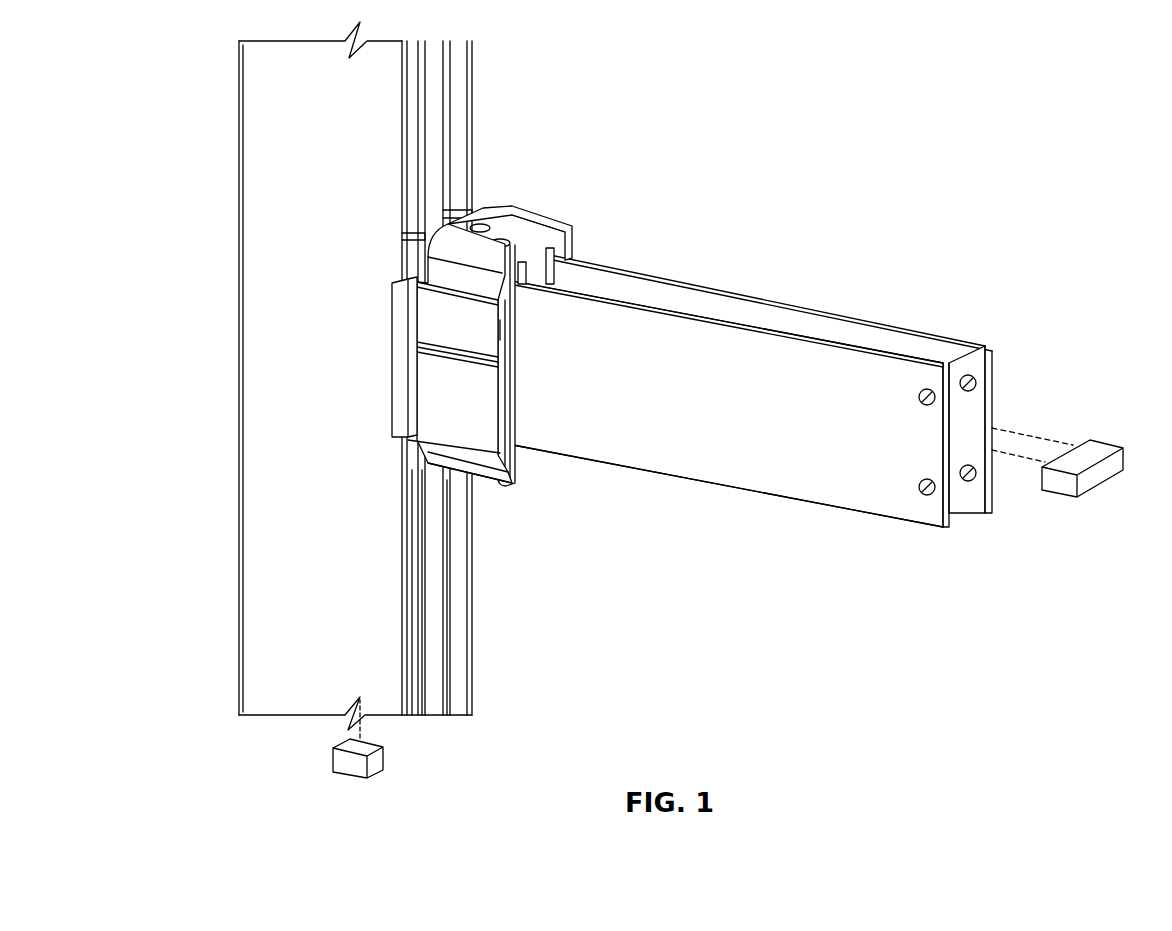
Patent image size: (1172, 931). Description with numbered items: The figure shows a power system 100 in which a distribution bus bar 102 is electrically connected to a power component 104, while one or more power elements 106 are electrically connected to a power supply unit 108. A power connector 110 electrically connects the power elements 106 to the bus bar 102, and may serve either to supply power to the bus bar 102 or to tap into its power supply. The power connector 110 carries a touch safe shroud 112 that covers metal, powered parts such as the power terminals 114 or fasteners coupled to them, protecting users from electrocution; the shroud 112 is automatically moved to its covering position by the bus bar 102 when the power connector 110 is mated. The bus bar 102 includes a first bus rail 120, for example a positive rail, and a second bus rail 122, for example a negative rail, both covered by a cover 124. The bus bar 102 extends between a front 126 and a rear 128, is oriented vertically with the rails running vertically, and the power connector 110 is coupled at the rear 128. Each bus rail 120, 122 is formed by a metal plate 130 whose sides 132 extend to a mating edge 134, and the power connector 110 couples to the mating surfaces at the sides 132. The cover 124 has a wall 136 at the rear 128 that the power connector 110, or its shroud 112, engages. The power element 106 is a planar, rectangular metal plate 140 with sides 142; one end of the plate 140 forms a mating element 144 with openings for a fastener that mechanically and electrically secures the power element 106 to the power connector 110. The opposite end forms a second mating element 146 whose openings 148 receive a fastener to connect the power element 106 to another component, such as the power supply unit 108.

The power system 100 is at (688, 60).
The distribution bus bar 102 is at (480, 424).
The power component 104 is at (333, 762).
The power element 106 is at (775, 423).
The power supply unit 108 is at (1105, 440).
The power connector 110 is at (542, 316).
The touch safe shroud 112 is at (512, 228).
The power terminal 114 is at (572, 222).
The first bus rail 120 is at (413, 158).
The second bus rail 122 is at (436, 103).
The cover 124 is at (259, 183).
The front 126 is at (259, 601).
The rear 128 is at (472, 612).
The metal plate 130 is at (413, 703).
The side 132 is at (425, 663).
The mating edge 134 is at (425, 693).
The wall 136 is at (405, 590).
The metal plate 140 is at (750, 462).
The side 142 is at (930, 515).
The mating element 144 is at (516, 330).
The second mating element 146 is at (925, 423).
The opening 148 is at (929, 388).